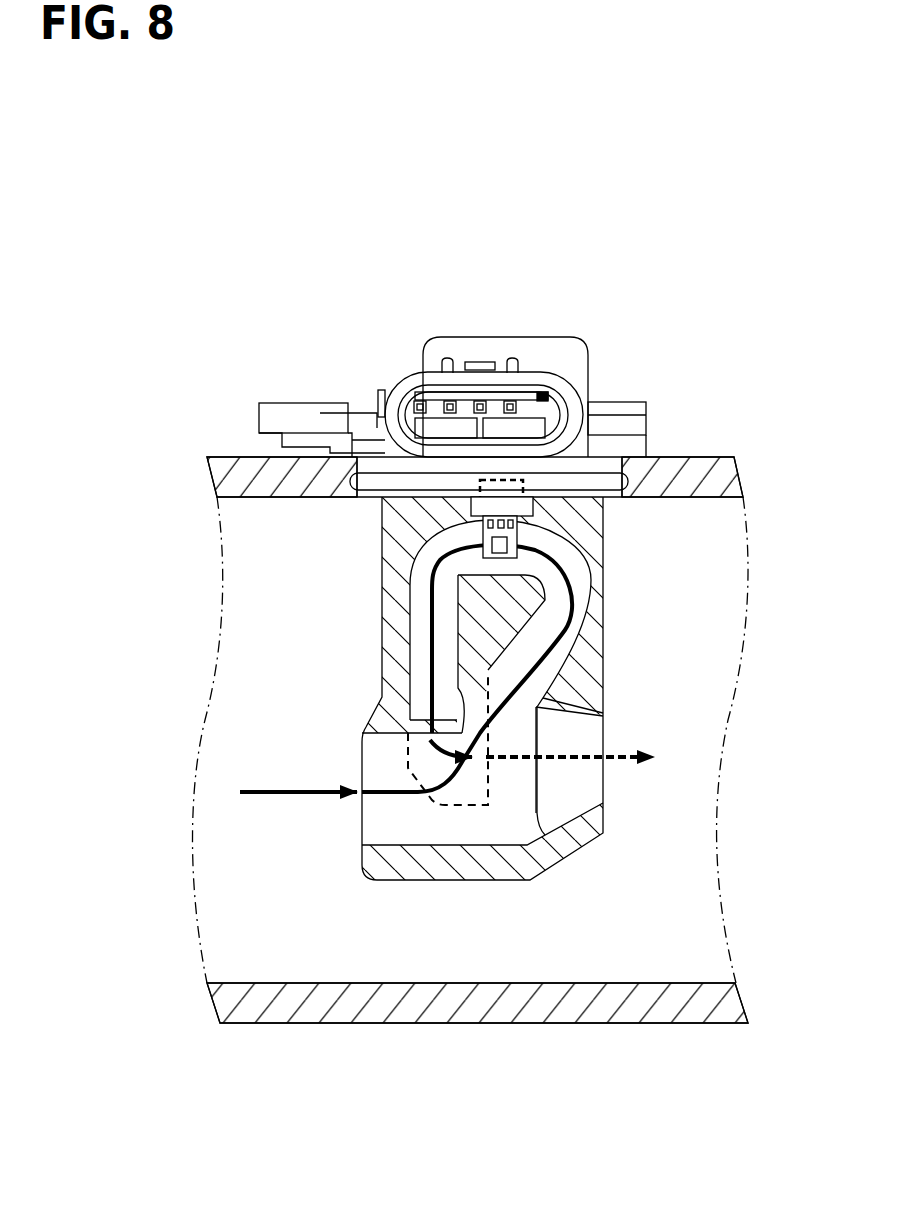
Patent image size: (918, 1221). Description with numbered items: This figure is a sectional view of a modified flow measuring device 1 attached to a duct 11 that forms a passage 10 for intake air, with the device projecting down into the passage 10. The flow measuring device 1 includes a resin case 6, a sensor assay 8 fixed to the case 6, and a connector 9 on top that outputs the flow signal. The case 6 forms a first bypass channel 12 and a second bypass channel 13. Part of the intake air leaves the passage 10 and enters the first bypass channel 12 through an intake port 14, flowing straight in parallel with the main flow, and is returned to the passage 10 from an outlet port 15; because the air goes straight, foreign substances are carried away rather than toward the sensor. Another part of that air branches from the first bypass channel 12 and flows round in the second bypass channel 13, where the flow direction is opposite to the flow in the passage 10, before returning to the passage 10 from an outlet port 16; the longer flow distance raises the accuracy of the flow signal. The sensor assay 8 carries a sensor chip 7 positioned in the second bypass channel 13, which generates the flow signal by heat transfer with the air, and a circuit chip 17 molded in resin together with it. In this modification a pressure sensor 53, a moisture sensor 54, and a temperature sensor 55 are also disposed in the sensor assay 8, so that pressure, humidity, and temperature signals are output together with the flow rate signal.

The flow measuring device 1 is at (723, 295).
The case 6 is at (612, 517).
The sensor chip 7 is at (483, 525).
The sensor assay 8 is at (522, 528).
The connector 9 is at (535, 380).
The passage 10 is at (668, 907).
The duct 11 is at (653, 1005).
The first bypass channel 12 is at (474, 825).
The second bypass channel 13 is at (580, 583).
The intake port 14 is at (362, 762).
The outlet port 15 is at (603, 727).
The outlet port 16 is at (488, 777).
The circuit chip 17 is at (513, 477).
The pressure sensor 53 is at (480, 522).
The moisture sensor 54 is at (502, 518).
The temperature sensor 55 is at (523, 480).